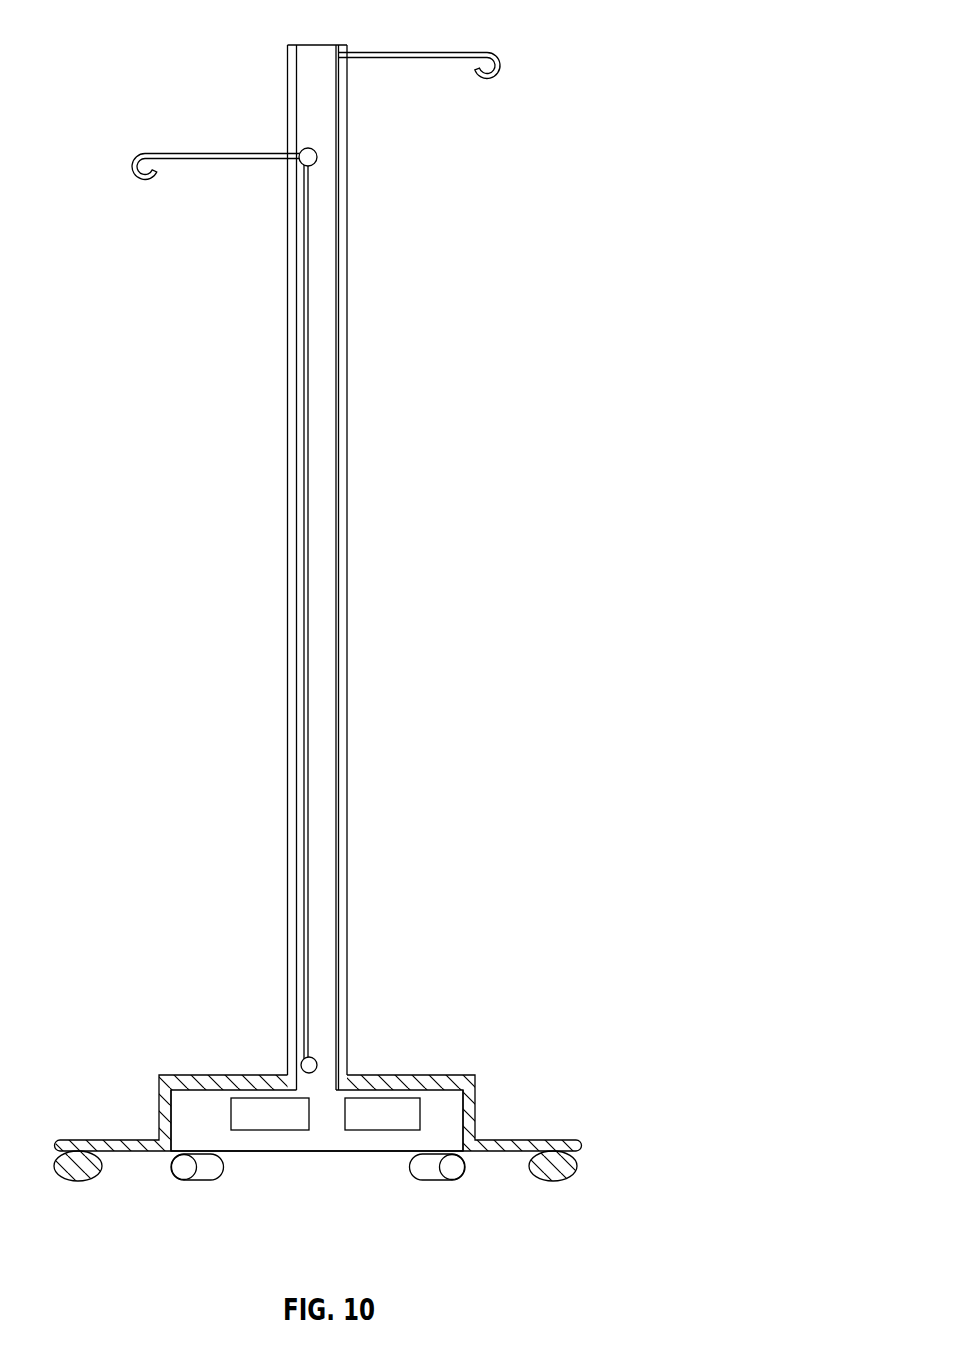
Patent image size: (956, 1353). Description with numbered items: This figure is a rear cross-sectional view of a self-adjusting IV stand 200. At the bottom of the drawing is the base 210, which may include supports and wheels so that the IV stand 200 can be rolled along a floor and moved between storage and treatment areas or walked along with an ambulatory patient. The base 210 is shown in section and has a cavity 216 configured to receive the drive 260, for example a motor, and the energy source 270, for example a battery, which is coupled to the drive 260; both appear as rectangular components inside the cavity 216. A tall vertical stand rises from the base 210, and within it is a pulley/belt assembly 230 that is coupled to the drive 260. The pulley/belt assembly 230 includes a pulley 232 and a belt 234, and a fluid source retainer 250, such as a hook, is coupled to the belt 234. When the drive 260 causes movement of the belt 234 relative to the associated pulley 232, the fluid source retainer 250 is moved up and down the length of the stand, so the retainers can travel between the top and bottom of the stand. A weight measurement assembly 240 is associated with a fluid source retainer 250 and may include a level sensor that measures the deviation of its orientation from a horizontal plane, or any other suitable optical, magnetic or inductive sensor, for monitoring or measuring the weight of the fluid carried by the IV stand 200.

The IV stand 200 is at (616, 25).
The base 210 is at (168, 1108).
The cavity 216 is at (438, 1117).
The pulley/belt assembly 230 is at (309, 1050).
The pulley 232 is at (308, 1080).
The belt 234 is at (311, 406).
The weight measurement assembly 240 is at (299, 154).
The fluid source retainer 250 is at (504, 62).
The drive 260 is at (262, 1112).
The energy source 270 is at (405, 1113).